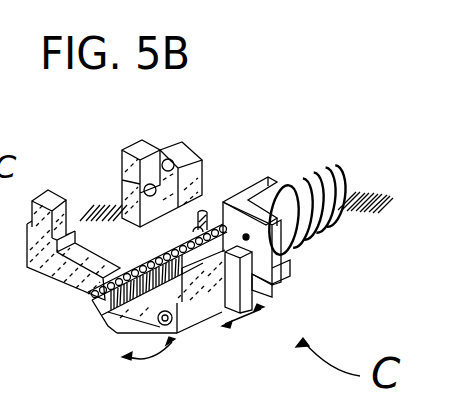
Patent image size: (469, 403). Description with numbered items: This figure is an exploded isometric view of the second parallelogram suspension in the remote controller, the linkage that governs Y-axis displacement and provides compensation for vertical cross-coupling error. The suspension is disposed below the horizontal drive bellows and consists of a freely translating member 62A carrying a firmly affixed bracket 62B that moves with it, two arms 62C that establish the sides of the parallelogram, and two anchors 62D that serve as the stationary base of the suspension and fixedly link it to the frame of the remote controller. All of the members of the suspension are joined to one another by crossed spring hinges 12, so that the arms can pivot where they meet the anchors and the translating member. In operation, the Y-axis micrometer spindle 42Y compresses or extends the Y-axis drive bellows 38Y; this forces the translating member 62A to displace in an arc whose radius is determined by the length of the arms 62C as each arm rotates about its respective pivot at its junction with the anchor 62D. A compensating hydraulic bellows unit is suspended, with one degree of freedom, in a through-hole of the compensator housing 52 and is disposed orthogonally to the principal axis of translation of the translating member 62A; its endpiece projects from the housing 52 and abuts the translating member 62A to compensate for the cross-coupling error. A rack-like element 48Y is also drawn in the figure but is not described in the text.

The crossed spring hinges 12 is at (163, 148).
The compensator housing 52 is at (204, 182).
The Y-axis drive bellows 38Y is at (333, 228).
The Y-axis micrometer spindle 42Y is at (110, 324).
The ball row 48Y is at (85, 306).
The translating member 62A is at (207, 328).
The bracket 62B is at (258, 294).
The arms 62C is at (38, 273).
The anchors 62D is at (127, 173).